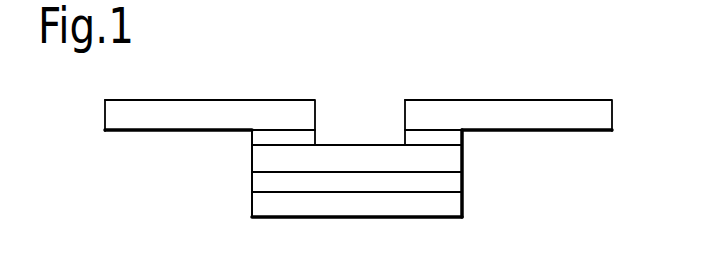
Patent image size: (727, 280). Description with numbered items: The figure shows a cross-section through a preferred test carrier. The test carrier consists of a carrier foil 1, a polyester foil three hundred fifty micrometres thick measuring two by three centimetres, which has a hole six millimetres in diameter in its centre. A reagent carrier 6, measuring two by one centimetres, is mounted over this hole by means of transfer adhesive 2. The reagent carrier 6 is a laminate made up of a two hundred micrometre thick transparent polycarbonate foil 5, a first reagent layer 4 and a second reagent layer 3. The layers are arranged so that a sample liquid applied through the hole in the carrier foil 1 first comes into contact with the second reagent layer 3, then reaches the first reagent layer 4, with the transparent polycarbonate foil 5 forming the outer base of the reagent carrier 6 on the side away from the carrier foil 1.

The carrier foil 1 is at (576, 115).
The transfer adhesive 2 is at (447, 135).
The second reagent layer 3 is at (450, 165).
The first reagent layer 4 is at (453, 183).
The transparent polycarbonate foil 5 is at (452, 207).
The reagent carrier 6 is at (245, 133).